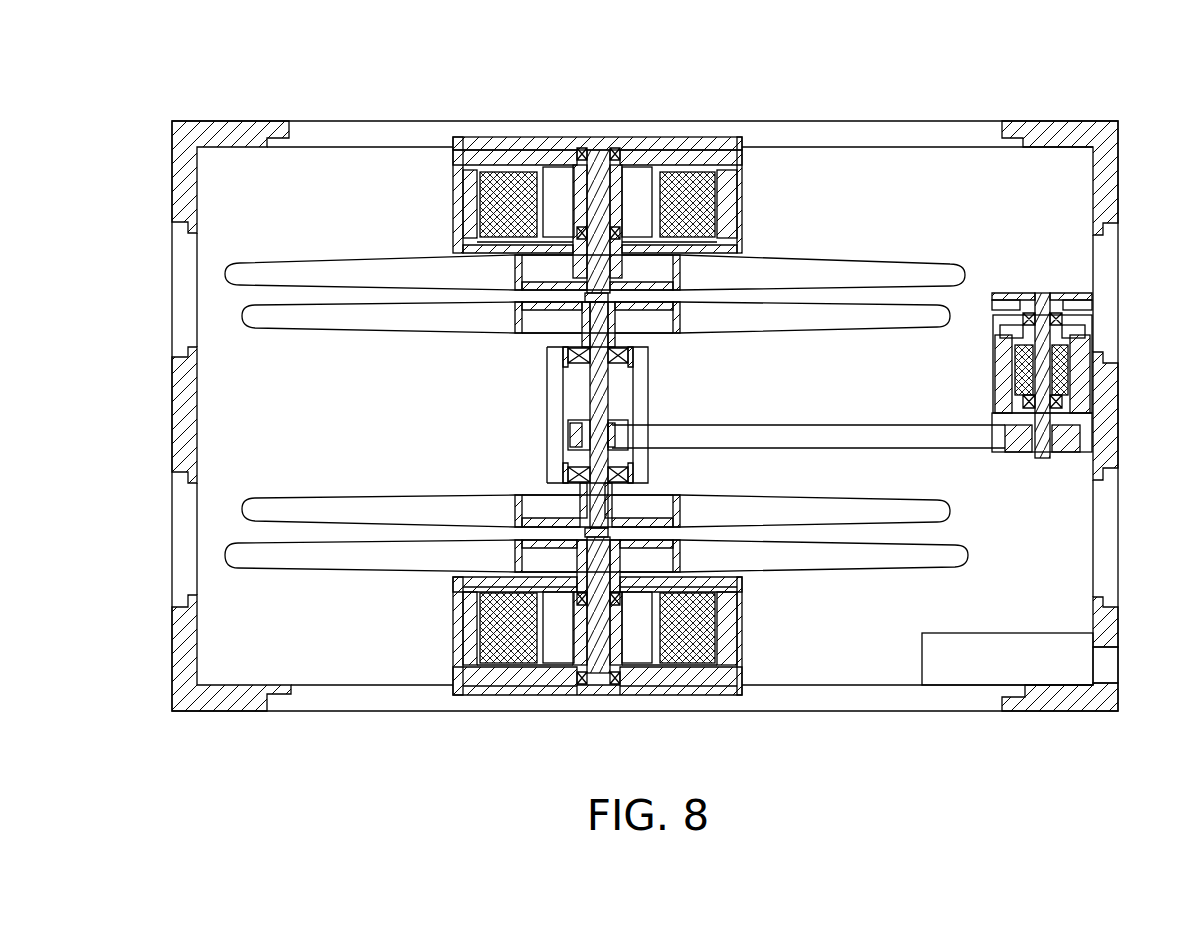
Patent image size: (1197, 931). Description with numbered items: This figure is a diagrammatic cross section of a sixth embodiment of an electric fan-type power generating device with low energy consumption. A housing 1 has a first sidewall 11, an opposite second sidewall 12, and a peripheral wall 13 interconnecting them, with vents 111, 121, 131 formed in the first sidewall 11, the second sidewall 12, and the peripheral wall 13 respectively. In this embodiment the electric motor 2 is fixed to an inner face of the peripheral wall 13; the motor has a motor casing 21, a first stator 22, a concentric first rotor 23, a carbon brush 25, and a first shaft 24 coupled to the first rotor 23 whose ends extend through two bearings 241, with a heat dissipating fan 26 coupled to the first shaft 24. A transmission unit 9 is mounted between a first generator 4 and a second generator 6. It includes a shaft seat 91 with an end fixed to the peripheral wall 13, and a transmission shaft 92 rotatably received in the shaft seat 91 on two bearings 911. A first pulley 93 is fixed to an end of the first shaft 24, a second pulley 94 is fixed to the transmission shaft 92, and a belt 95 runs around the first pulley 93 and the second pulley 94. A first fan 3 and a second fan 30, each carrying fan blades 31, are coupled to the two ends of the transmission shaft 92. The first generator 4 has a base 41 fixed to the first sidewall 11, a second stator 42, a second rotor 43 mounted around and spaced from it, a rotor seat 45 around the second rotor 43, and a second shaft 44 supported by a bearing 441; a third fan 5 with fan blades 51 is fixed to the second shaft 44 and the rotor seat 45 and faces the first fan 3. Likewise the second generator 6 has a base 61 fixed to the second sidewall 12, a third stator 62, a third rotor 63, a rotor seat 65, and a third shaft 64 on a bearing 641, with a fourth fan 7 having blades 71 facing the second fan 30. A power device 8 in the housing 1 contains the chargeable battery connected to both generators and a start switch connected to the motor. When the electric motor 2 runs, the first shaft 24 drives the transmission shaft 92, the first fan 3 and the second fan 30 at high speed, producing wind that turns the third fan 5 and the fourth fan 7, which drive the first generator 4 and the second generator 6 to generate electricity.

The housing 1 is at (1086, 119).
The first sidewall 11 is at (500, 140).
The vent 111 is at (364, 133).
The second sidewall 12 is at (556, 690).
The vent 121 is at (388, 697).
The peripheral wall 13 is at (172, 172).
The vent 131 is at (185, 285).
The electric motor 2 is at (992, 358).
The motor casing 21 is at (995, 370).
The first stator 22 is at (1090, 380).
The first rotor 23 is at (995, 400).
The first shaft 24 is at (1090, 360).
The bearing 241 is at (1090, 413).
The carbon brush 25 is at (1090, 337).
The heat dissipating fan 26 is at (1093, 306).
The first fan 3 is at (378, 317).
The second fan 30 is at (798, 512).
The fan blades 31 is at (796, 330).
The first generator 4 is at (453, 203).
The base 41 is at (650, 166).
The second stator 42 is at (693, 182).
The second rotor 43 is at (742, 220).
The second shaft 44 is at (598, 158).
The bearing 441 is at (578, 150).
The rotor seat 45 is at (742, 190).
The third fan 5 is at (884, 278).
The fan blades 51 is at (332, 278).
The second generator 6 is at (742, 628).
The base 61 is at (688, 672).
The third stator 62 is at (510, 672).
The third rotor 63 is at (462, 640).
The third shaft 64 is at (597, 668).
The bearing 641 is at (617, 682).
The rotor seat 65 is at (453, 598).
The fourth fan 7 is at (303, 553).
The blades 71 is at (836, 553).
The power device 8 is at (963, 668).
The transmission unit 9 is at (648, 370).
The shaft seat 91 is at (552, 440).
The bearings 911 is at (566, 357).
The transmission shaft 92 is at (572, 397).
The first pulley 93 is at (1070, 458).
The second pulley 94 is at (613, 412).
The belt 95 is at (847, 435).